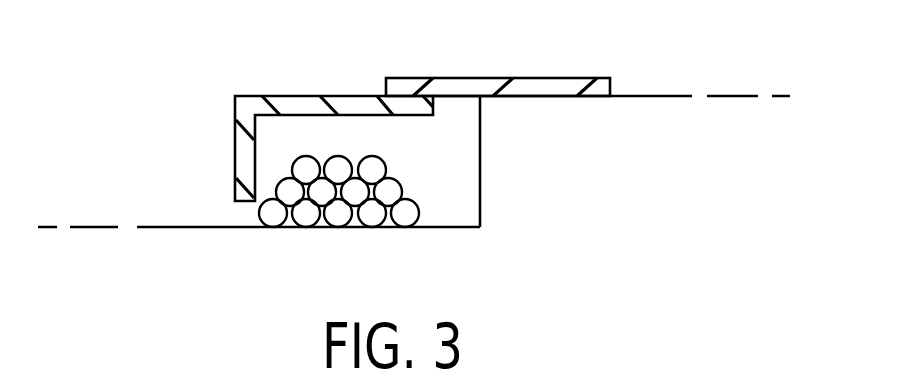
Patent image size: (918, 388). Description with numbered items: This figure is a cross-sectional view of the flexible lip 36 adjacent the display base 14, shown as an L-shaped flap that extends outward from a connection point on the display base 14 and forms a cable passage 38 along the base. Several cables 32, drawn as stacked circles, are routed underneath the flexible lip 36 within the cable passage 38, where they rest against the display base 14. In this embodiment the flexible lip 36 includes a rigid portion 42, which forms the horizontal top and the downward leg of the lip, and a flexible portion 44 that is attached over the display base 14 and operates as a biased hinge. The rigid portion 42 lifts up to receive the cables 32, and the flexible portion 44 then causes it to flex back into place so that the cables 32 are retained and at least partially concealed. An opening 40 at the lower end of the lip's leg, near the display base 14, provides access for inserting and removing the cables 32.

The display base 14 is at (650, 96).
The cables 32 is at (413, 178).
The flexible lip 36 is at (235, 63).
The cable passage 38 is at (423, 140).
The opening 40 is at (243, 215).
The rigid portion 42 is at (325, 95).
The flexible portion 44 is at (507, 78).